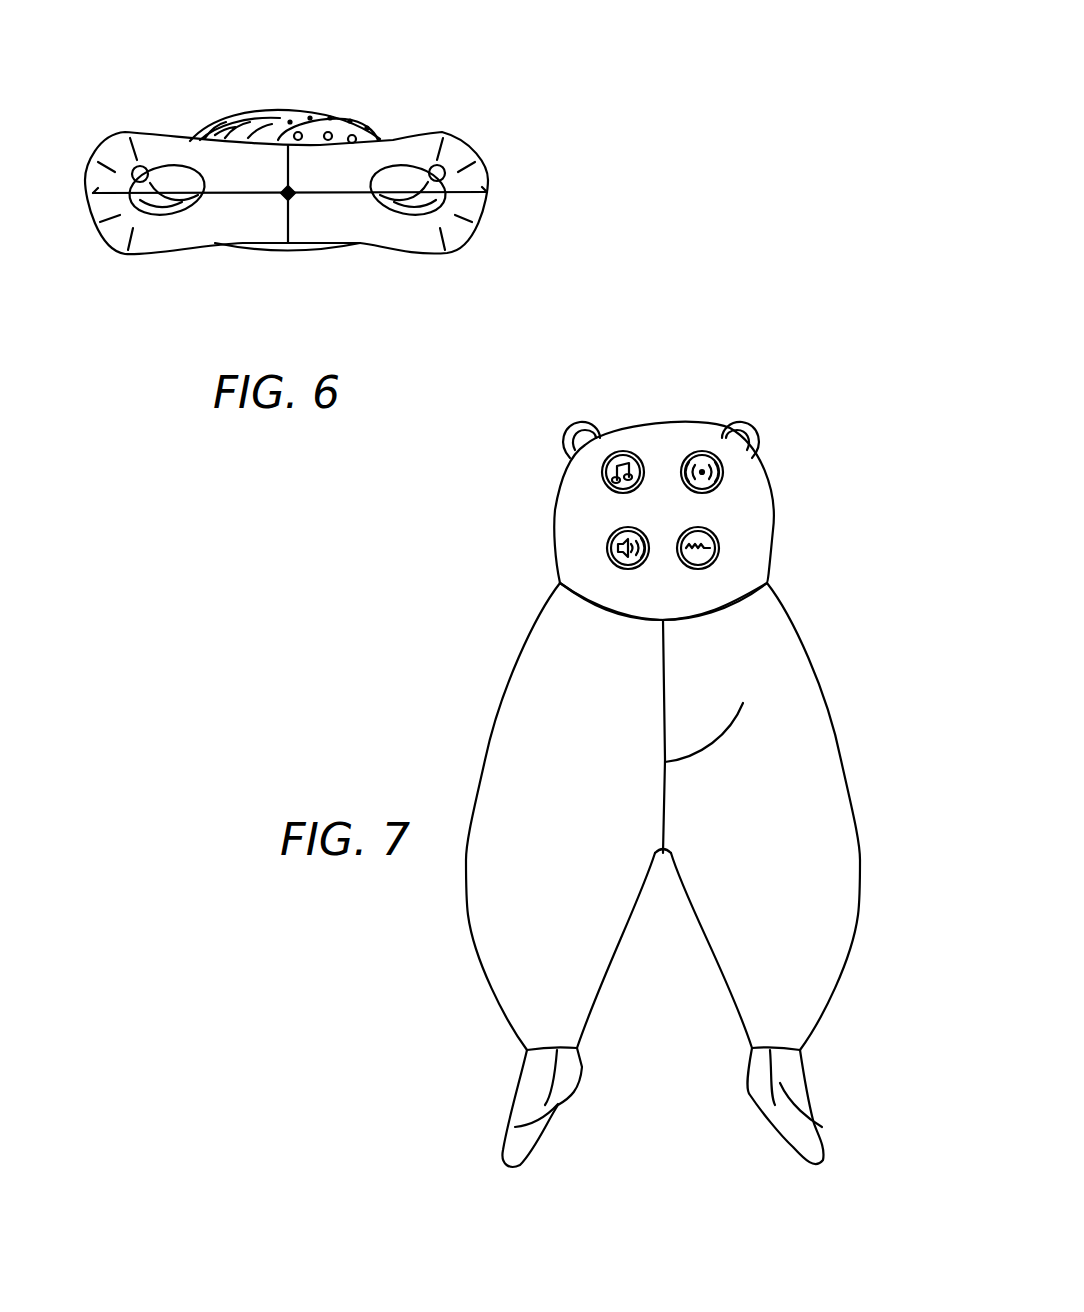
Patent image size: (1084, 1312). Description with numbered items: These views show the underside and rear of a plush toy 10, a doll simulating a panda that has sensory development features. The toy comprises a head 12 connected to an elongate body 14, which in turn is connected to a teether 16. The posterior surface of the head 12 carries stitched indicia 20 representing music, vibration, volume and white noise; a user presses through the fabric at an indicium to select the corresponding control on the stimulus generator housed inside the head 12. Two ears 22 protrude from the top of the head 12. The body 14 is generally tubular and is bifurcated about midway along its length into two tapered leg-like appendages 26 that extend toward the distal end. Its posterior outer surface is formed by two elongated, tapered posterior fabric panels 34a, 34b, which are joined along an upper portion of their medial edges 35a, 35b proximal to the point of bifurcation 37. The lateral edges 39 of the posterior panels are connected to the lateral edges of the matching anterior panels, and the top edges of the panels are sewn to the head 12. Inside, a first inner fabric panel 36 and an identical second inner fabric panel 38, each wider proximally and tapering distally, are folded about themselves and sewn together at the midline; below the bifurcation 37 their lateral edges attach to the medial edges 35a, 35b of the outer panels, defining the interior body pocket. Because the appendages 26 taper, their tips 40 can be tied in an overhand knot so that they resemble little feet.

In FIG. 6, the plush toy 10 is at (497, 121).
In FIG. 7, the plush toy 10 is at (788, 464).
In FIG. 6, the head 12 is at (276, 256).
In FIG. 7, the head 12 is at (773, 518).
In FIG. 6, the body 14 is at (413, 232).
In FIG. 7, the body 14 is at (830, 686).
In FIG. 6, the teether 16 is at (325, 118).
In FIG. 7, the indicia 20 is at (693, 455).
In FIG. 7, the ears 22 is at (580, 423).
In FIG. 7, the leg-like appendages 26 is at (577, 973).
In FIG. 7, the posterior fabric panel 34a is at (793, 856).
In FIG. 7, the posterior fabric panel 34b is at (597, 876).
In FIG. 7, the medial edge 35a is at (718, 717).
In FIG. 7, the medial edge 35b is at (660, 668).
In FIG. 6, the first inner fabric panel 36 is at (237, 193).
In FIG. 7, the point of bifurcation 37 is at (663, 855).
In FIG. 6, the second inner fabric panel 38 is at (333, 205).
In FIG. 6, the lateral edges 39 is at (95, 193).
In FIG. 7, the lateral edges 39 is at (466, 910).
In FIG. 6, the tips 40 is at (165, 172).
In FIG. 7, the tips 40 is at (522, 1075).